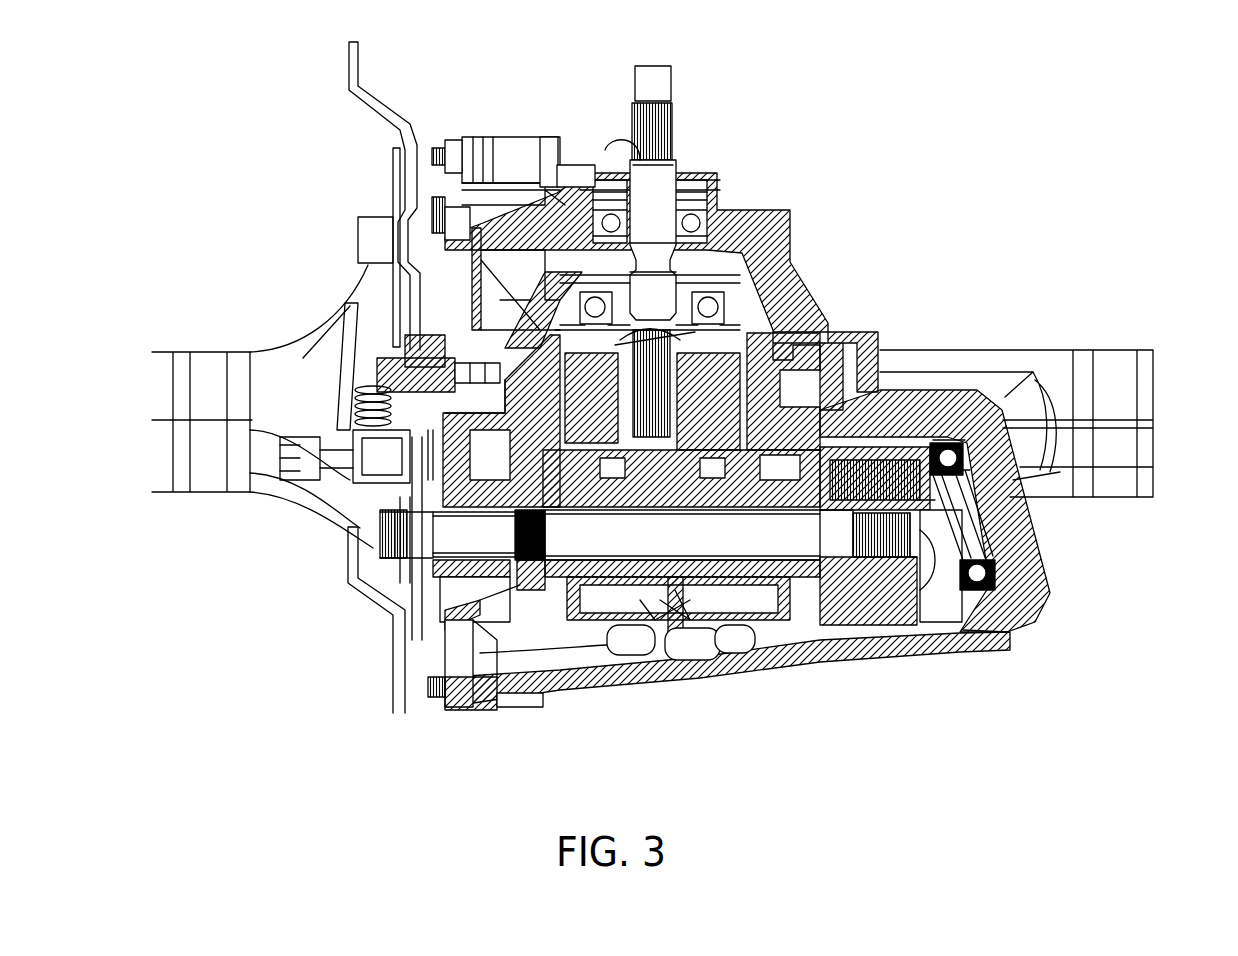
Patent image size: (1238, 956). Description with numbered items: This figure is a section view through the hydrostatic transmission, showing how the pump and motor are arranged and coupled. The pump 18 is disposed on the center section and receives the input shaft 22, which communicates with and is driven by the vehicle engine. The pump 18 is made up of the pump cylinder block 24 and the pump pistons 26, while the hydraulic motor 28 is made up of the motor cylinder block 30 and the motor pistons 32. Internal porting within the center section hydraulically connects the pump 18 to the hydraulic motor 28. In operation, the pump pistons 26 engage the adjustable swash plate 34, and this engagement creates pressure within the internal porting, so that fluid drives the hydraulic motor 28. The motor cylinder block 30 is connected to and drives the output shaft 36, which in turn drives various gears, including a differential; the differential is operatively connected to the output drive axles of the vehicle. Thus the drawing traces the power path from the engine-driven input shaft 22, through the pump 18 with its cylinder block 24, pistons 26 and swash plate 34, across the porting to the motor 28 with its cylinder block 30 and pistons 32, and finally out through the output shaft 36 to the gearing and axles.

The pump 18 is at (800, 285).
The input shaft 22 is at (672, 85).
The pump cylinder block 24 is at (722, 372).
The pump pistons 26 is at (540, 335).
The hydraulic motor 28 is at (967, 620).
The motor cylinder block 30 is at (880, 612).
The motor pistons 32 is at (937, 593).
The adjustable swash plate 34 is at (768, 307).
The output shaft 36 is at (690, 549).